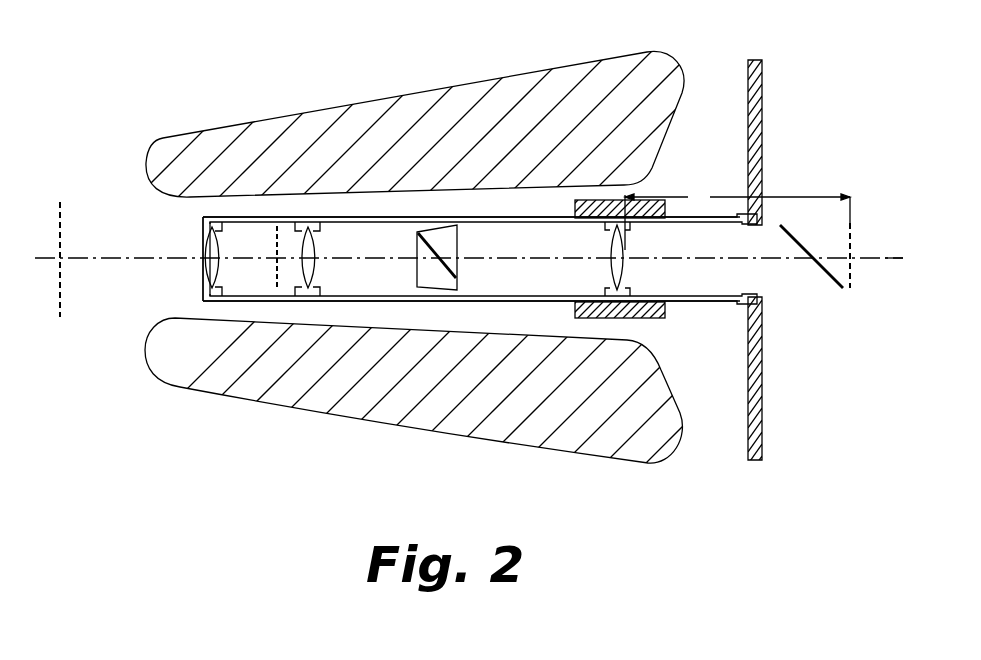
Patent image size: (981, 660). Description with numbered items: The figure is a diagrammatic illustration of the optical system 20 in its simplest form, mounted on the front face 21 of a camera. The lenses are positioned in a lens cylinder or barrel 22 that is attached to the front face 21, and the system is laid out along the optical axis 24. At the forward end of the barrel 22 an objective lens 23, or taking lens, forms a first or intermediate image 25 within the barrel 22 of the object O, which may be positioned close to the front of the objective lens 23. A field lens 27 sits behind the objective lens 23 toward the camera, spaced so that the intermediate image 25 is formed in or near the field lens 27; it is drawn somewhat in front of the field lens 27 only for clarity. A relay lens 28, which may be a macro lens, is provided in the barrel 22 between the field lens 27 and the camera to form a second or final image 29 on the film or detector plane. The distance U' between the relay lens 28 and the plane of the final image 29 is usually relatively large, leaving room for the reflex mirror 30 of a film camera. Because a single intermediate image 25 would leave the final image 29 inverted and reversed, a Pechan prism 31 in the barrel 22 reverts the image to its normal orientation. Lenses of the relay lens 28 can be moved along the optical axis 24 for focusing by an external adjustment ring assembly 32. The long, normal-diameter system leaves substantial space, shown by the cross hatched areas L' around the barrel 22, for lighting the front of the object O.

The optical system 20 is at (170, 300).
The front face 21 is at (748, 425).
The lens cylinder or barrel 22 is at (382, 217).
The objective lens 23 is at (205, 273).
The optical axis 24 is at (885, 262).
The intermediate image 25 is at (277, 238).
The field lens 27 is at (316, 272).
The relay lens 28 is at (626, 268).
The final image 29 is at (850, 240).
The reflex mirror 30 is at (832, 282).
The Pechan prism 31 is at (458, 250).
The external adjustment ring assembly 32 is at (637, 319).
The object O is at (62, 224).
The cross hatched areas L' is at (455, 257).
The distance between relay lens and image plane U' is at (737, 217).